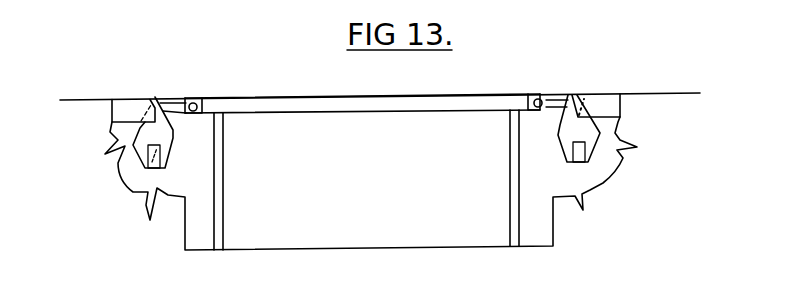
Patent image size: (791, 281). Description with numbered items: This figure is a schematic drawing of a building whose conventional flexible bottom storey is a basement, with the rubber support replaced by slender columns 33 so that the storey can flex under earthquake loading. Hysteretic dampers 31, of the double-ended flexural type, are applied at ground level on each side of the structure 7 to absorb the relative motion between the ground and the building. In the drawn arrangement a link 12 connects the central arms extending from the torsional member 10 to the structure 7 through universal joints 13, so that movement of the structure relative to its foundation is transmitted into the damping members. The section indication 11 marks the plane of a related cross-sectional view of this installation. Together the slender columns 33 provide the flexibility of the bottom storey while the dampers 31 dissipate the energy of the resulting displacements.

The structure 7 is at (298, 97).
The torsional member 10 is at (145, 166).
The section line 11 is at (368, 126).
The link 12 is at (172, 115).
The universal joints 13 is at (191, 105).
The dampers 31 is at (136, 62).
The slender columns 33 is at (224, 187).